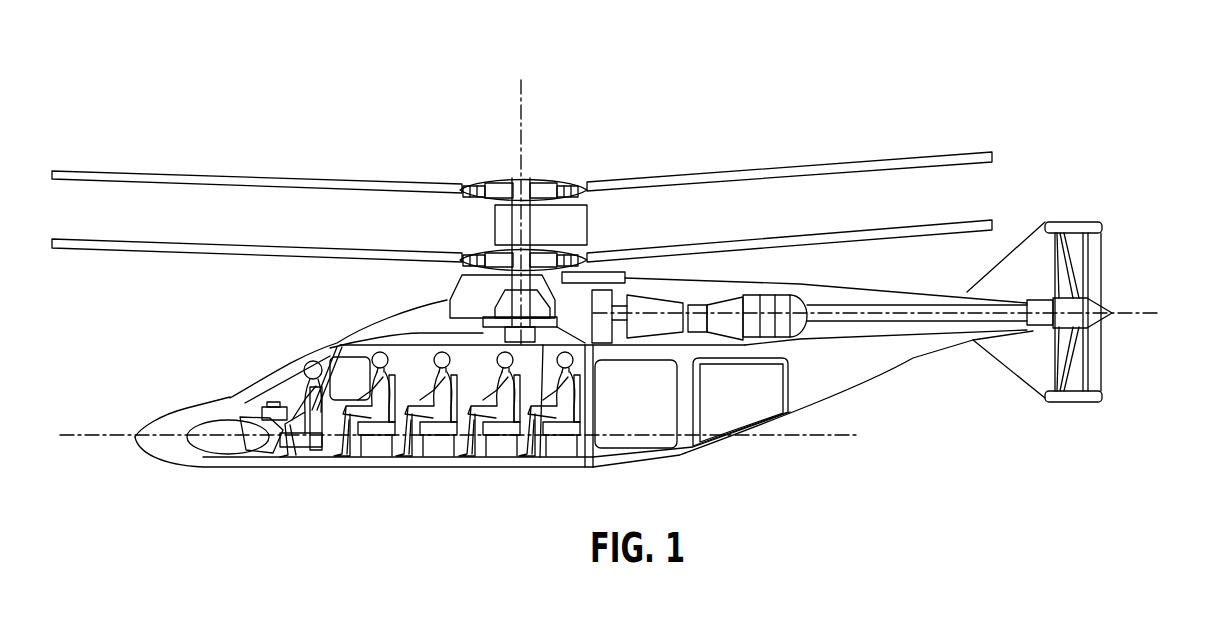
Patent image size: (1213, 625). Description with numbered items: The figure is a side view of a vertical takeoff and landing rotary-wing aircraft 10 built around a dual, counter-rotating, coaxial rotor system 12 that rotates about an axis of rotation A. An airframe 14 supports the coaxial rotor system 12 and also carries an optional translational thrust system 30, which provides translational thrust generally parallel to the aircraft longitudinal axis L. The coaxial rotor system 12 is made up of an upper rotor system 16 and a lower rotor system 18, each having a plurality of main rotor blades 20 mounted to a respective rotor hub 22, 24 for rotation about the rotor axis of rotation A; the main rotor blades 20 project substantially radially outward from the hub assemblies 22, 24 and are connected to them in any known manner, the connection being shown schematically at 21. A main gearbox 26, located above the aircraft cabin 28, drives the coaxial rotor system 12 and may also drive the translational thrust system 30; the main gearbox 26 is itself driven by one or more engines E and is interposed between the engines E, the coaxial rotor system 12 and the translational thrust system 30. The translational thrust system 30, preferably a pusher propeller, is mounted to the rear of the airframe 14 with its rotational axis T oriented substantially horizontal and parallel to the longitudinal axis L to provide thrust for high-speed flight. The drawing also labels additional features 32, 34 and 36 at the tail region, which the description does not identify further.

The rotary-wing aircraft 10 is at (817, 118).
The coaxial rotor system 12 is at (606, 160).
The airframe 14 is at (345, 340).
The upper rotor system 16 is at (489, 170).
The lower rotor system 18 is at (483, 245).
The main rotor blades 20 is at (677, 247).
The blade connection 21 is at (455, 181).
The rotor hub 22 is at (547, 177).
The rotor hub 24 is at (548, 257).
The main gearbox 26 is at (495, 305).
The aircraft cabin 28 is at (440, 458).
The translational thrust system 30 is at (1134, 257).
The propeller blades 32 is at (1067, 287).
The propeller duct / shroud 34 is at (1075, 225).
The rotor mast shaft housing 36 is at (484, 213).
The axis of rotation A is at (524, 96).
The engines E is at (737, 298).
The aircraft longitudinal axis L is at (858, 436).
The rotational axis T is at (1136, 316).